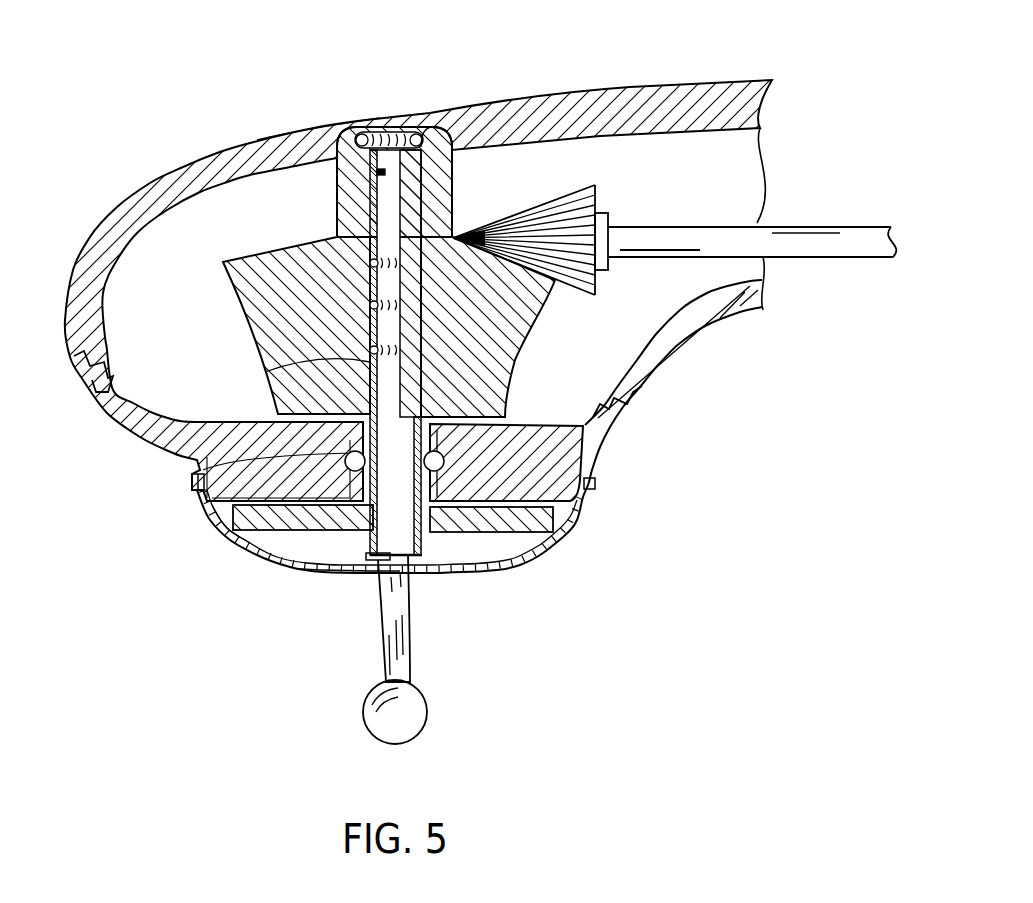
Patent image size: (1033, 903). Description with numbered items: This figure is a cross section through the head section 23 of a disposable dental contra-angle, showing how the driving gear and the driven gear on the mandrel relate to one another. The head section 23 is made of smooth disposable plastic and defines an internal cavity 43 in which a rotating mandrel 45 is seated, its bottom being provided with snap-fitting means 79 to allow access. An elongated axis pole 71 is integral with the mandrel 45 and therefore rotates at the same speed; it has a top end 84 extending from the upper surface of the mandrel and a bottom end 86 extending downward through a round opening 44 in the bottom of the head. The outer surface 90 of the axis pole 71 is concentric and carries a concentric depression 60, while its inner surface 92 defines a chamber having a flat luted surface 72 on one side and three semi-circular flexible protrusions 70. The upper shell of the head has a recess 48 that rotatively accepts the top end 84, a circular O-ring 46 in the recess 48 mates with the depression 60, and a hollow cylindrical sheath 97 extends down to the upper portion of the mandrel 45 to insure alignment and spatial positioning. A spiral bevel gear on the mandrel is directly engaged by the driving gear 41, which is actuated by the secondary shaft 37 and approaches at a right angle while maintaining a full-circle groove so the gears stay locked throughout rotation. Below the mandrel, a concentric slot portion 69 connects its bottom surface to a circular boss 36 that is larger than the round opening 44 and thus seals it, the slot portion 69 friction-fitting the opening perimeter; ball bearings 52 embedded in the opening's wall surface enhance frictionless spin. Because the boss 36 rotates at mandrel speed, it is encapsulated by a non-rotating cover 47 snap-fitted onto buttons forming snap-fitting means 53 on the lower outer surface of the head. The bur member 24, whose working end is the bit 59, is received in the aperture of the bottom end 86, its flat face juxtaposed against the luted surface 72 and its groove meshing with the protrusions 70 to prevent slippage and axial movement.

The head section 23 is at (170, 133).
The bur member 24 is at (410, 645).
The circular boss 36 is at (223, 517).
The secondary shaft 37 is at (648, 224).
The driving gear 41 is at (547, 200).
The cavity 43 is at (583, 342).
The round opening 44 is at (470, 505).
The mandrel 45 is at (226, 267).
The O-ring 46 is at (342, 124).
The cover 47 is at (582, 515).
The recess 48 is at (388, 128).
The ball bearings 52 is at (200, 462).
The snap-fitting means 53 is at (596, 480).
The bit 59 is at (430, 716).
The concentric depression 60 is at (393, 133).
The concentric slot portion 69 is at (420, 535).
The semi-circular flexible protrusion 70 is at (372, 266).
The axis pole 71 is at (372, 350).
The flat luted surface 72 is at (377, 200).
The snap-fitting means 79 is at (97, 394).
The top end 84 is at (427, 145).
The bottom end 86 is at (365, 558).
The outer surface 90 is at (370, 551).
The inner surface 92 is at (378, 172).
The hollow cylindrical sheath 97 is at (453, 192).